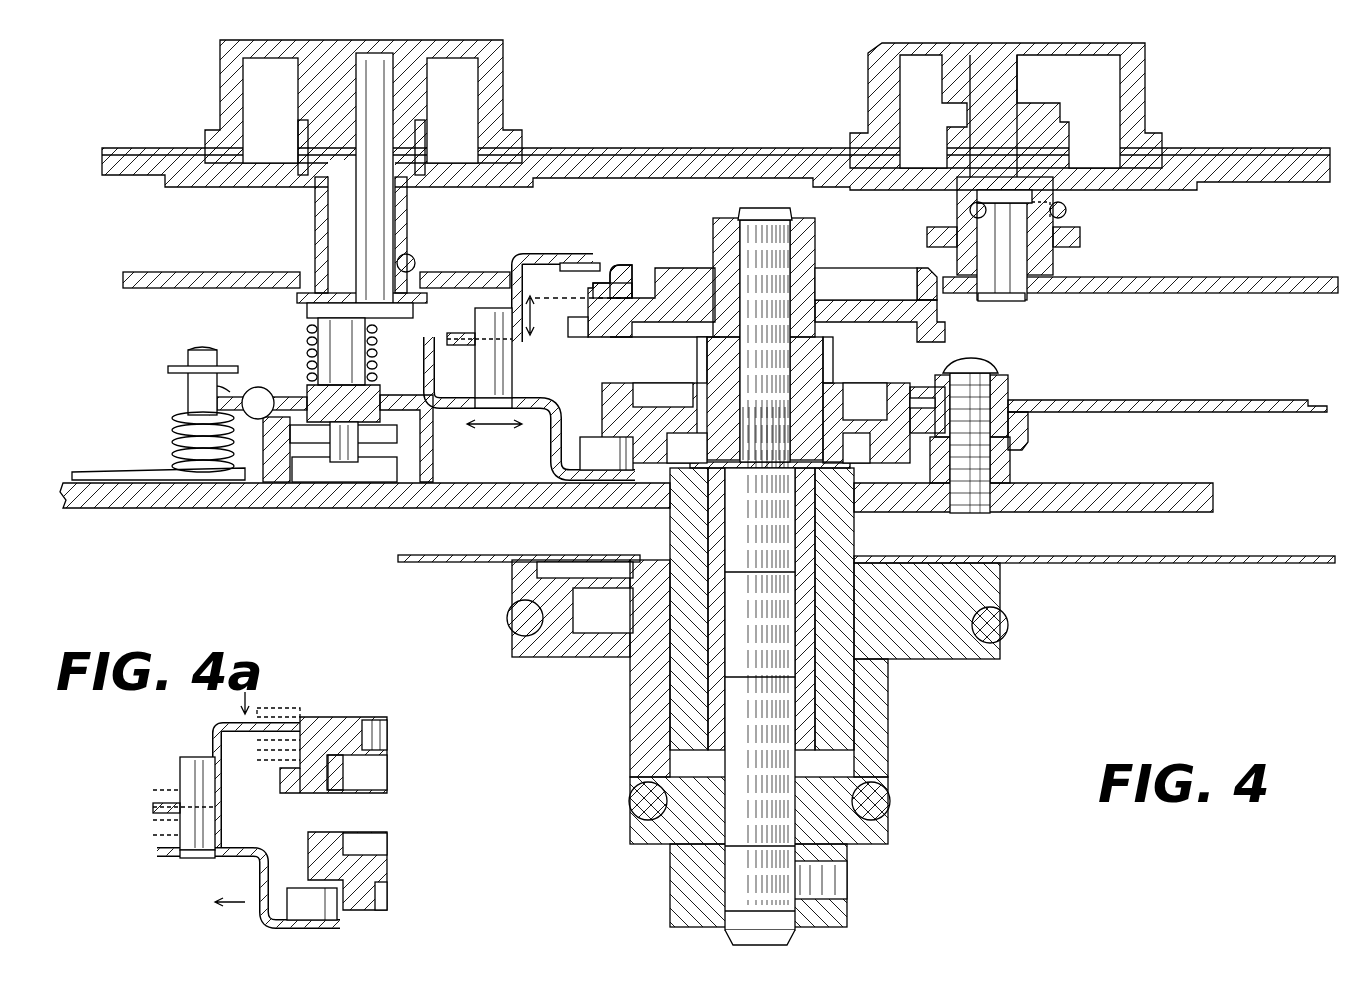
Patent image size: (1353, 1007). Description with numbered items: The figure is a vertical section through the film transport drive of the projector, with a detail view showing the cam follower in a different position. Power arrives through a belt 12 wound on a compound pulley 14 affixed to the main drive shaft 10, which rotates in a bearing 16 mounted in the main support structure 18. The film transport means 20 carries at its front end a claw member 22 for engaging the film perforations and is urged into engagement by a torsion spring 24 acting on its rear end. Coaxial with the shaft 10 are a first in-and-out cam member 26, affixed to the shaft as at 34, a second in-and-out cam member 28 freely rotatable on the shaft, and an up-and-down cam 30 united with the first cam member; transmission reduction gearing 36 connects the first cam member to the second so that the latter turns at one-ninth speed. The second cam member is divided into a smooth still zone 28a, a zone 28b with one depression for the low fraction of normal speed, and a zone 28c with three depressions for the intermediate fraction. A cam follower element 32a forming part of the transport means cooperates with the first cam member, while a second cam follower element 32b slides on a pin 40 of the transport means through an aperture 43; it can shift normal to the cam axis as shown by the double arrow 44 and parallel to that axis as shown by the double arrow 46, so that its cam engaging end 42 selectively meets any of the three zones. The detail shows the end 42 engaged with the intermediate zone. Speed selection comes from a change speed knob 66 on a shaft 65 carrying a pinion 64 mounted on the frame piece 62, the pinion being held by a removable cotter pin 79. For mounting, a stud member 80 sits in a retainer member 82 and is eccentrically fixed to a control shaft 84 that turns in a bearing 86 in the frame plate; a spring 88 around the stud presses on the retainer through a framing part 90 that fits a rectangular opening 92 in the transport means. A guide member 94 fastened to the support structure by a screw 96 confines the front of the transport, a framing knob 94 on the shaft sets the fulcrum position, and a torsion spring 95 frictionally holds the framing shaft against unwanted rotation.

In FIG. 4, the main drive shaft 10 is at (765, 255).
In FIG. 4, the belt 12 is at (1008, 630).
In FIG. 4, the compound pulley 14 is at (1000, 590).
In FIG. 4, the bearing 16 is at (818, 535).
In FIG. 4, the main support structure 18 is at (1110, 500).
In FIG. 4A, the main support structure 18 is at (300, 715).
In FIG. 4, the film transport means 20 is at (1185, 398).
In FIG. 4, the claw member 22 is at (1320, 556).
In FIG. 4, the torsion spring 24 is at (172, 425).
In FIG. 4, the first rotatable in-and-out cam member 26 is at (910, 458).
In FIG. 4A, the first rotatable in-and-out cam member 26 is at (403, 865).
In FIG. 4, the second rotatable in-and-out cam member 28 is at (673, 275).
In FIG. 4A, the second rotatable in-and-out cam member 28 is at (403, 766).
In FIG. 4, the still cam zone 28a is at (600, 301).
In FIG. 4A, the still cam zone 28a is at (305, 758).
In FIG. 4, the low-speed cam zone 28b is at (605, 288).
In FIG. 4A, the low-speed cam zone 28b is at (305, 748).
In FIG. 4, the intermediate-speed cam zone 28c is at (622, 268).
In FIG. 4A, the intermediate-speed cam zone 28c is at (305, 738).
In FIG. 4, the up-and-down cam 30 is at (998, 343).
In FIG. 4, the first cam follower element 32a is at (590, 448).
In FIG. 4A, the first cam follower element 32a is at (170, 858).
In FIG. 4, the second cam follower element 32b is at (515, 255).
In FIG. 4A, the second cam follower element 32b is at (212, 726).
In FIG. 4, the affixment of first cam member to shaft 34 is at (750, 420).
In FIG. 4, the transmission reduction gearing 36 is at (833, 360).
In FIG. 4A, the transmission reduction gearing 36 is at (285, 783).
In FIG. 4, the pin 40 is at (480, 372).
In FIG. 4A, the pin 40 is at (180, 762).
In FIG. 4, the cam engaging end 42 is at (580, 262).
In FIG. 4A, the cam engaging end 42 is at (272, 720).
In FIG. 4, the aperture 43 is at (476, 338).
In FIG. 4A, the aperture 43 is at (160, 812).
In FIG. 4, the double arrow 44 is at (495, 432).
In FIG. 4, the double arrow 46 is at (533, 338).
In FIG. 4, the frame piece 62 is at (178, 272).
In FIG. 4, the pinion 64 is at (1080, 237).
In FIG. 4, the shaft of change speed knob 65 is at (1015, 263).
In FIG. 4, the change speed knob 66 is at (1130, 82).
In FIG. 4, the cotter pin 79 is at (1066, 210).
In FIG. 4, the stud member 80 is at (347, 450).
In FIG. 4, the retainer member 82 is at (280, 430).
In FIG. 4, the control shaft 84 is at (375, 232).
In FIG. 4, the bearing 86 is at (315, 232).
In FIG. 4, the spring 88 is at (305, 338).
In FIG. 4, the framing part 90 is at (315, 392).
In FIG. 4, the opening 92 is at (410, 398).
In FIG. 4, the guide member 94 is at (500, 72).
In FIG. 4, the torsion spring 95 is at (415, 263).
In FIG. 4, the screw 96 is at (1005, 378).